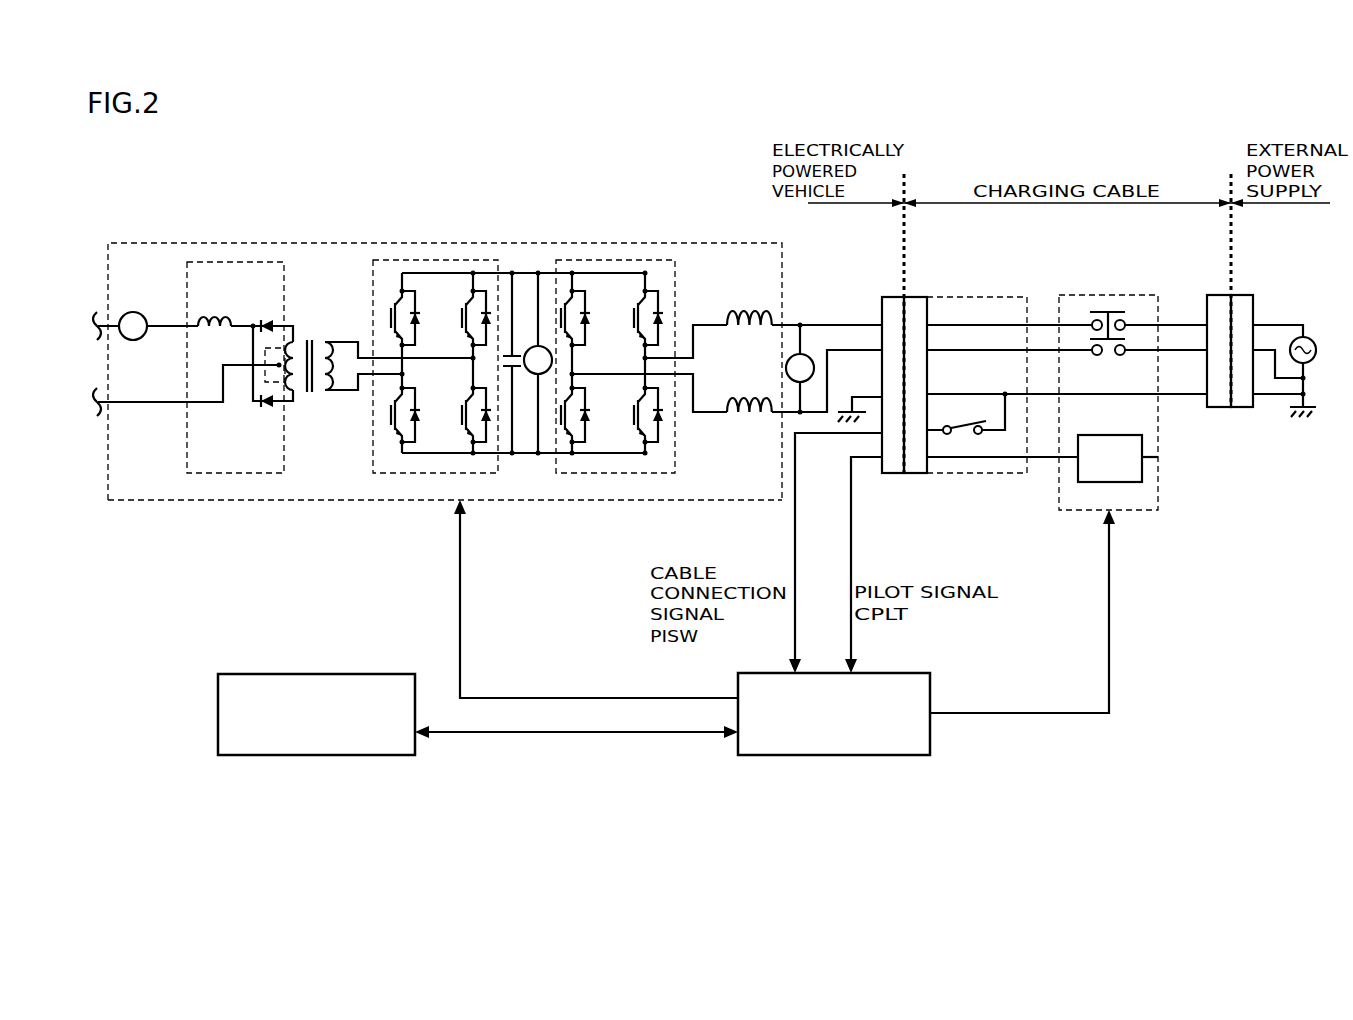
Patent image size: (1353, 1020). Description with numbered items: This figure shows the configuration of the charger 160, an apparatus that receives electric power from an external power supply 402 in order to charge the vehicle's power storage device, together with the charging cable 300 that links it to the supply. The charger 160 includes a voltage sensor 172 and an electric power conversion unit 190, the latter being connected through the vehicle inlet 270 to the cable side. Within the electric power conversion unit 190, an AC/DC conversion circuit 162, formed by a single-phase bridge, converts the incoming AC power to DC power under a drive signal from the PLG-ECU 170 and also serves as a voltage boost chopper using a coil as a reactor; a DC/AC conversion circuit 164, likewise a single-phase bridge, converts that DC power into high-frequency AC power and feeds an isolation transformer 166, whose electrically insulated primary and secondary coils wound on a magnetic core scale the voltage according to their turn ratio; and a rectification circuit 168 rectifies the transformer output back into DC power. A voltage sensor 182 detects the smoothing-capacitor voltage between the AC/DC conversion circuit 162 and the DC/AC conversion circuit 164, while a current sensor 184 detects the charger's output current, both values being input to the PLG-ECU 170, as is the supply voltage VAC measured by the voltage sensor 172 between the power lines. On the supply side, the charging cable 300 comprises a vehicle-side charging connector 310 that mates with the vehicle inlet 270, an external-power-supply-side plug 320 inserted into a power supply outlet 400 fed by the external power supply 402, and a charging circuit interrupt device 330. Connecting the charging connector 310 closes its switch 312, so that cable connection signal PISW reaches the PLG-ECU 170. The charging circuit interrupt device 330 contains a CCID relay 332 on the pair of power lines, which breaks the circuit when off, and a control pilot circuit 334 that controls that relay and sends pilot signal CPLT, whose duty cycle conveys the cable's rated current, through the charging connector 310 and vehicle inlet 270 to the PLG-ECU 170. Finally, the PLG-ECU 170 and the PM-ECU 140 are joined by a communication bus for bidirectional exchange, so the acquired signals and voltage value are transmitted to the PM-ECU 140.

The PM-ECU 140 is at (320, 756).
The charger 160 is at (473, 236).
The AC/DC conversion circuit 162 is at (601, 475).
The DC/AC conversion circuit 164 is at (492, 475).
The isolation transformer 166 is at (320, 407).
The rectification circuit 168 is at (240, 475).
The PLG-ECU 170 is at (820, 756).
The voltage sensor 172 is at (806, 353).
The voltage sensor 182 is at (534, 376).
The current sensor 184 is at (134, 312).
The electric power conversion unit 190 is at (380, 502).
The vehicle inlet 270 is at (887, 297).
The charging cable 300 is at (1027, 285).
The charging connector 310 is at (918, 297).
The switch 312 is at (963, 446).
The plug 320 is at (1217, 295).
The charging circuit interrupt device (CCID) 330 is at (1152, 510).
The CCID relay 332 is at (1084, 313).
The control pilot circuit 334 is at (1158, 457).
The power supply outlet 400 is at (1238, 407).
The external power supply 402 is at (1306, 338).